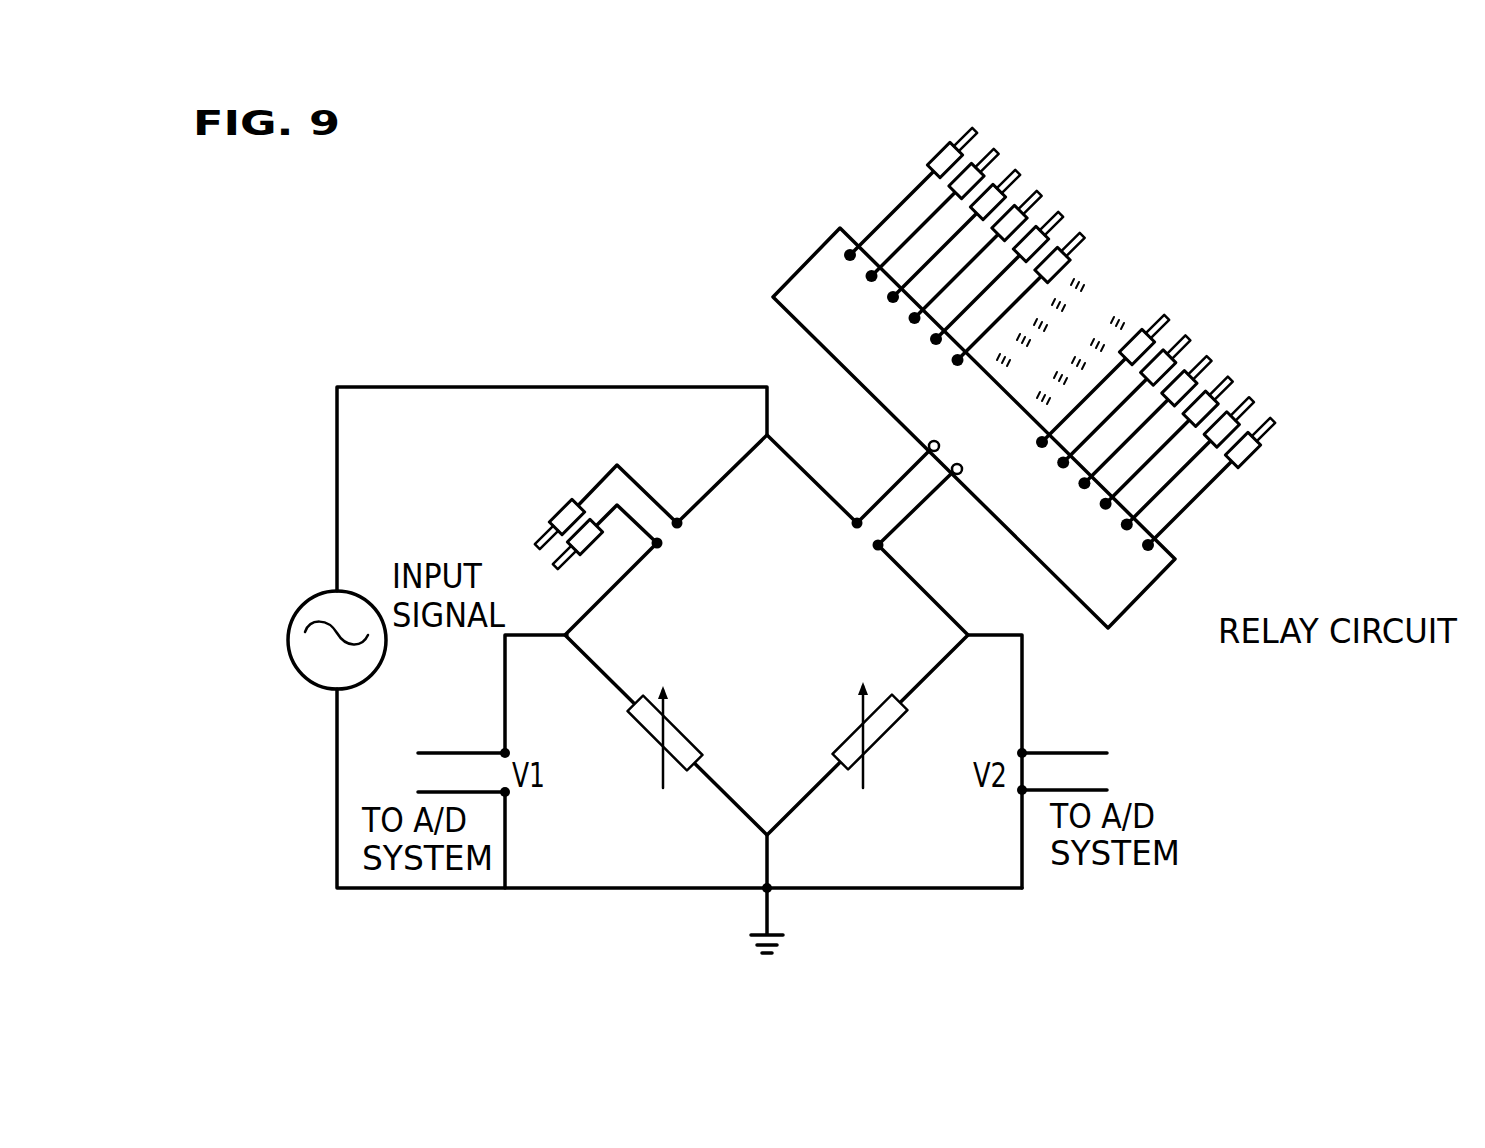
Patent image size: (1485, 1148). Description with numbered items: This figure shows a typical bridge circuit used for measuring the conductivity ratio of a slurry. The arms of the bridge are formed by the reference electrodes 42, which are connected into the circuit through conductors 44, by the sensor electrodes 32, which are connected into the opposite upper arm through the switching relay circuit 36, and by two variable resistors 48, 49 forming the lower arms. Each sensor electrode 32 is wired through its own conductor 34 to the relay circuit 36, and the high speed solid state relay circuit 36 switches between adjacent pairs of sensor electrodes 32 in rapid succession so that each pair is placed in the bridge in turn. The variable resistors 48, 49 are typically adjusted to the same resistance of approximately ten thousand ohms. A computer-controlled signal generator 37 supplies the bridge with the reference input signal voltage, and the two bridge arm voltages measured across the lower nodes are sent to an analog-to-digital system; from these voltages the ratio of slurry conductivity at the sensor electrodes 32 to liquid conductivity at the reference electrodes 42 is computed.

The sensor electrodes 32 is at (1224, 378).
The conductor 34 is at (1166, 497).
The switching relay circuit 36 is at (1118, 595).
The signal generator 37 is at (297, 592).
The reference electrodes 42 is at (540, 560).
The conductors 44 is at (596, 476).
The variable resistor 48 is at (670, 737).
The variable resistor 49 is at (860, 735).